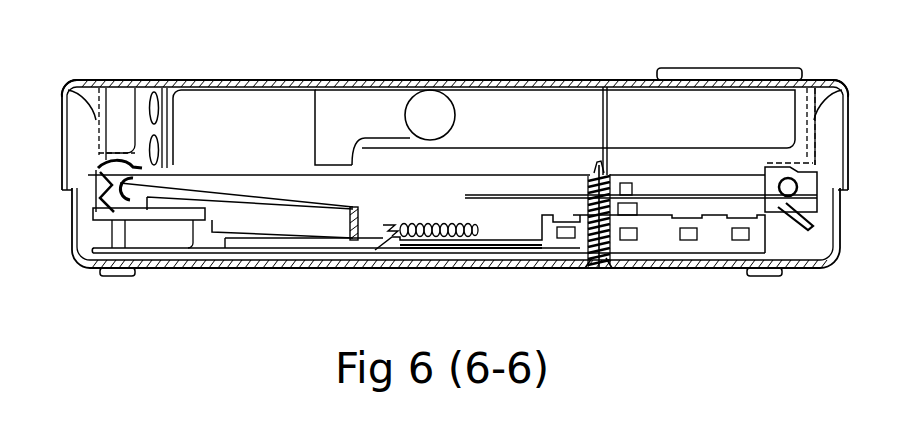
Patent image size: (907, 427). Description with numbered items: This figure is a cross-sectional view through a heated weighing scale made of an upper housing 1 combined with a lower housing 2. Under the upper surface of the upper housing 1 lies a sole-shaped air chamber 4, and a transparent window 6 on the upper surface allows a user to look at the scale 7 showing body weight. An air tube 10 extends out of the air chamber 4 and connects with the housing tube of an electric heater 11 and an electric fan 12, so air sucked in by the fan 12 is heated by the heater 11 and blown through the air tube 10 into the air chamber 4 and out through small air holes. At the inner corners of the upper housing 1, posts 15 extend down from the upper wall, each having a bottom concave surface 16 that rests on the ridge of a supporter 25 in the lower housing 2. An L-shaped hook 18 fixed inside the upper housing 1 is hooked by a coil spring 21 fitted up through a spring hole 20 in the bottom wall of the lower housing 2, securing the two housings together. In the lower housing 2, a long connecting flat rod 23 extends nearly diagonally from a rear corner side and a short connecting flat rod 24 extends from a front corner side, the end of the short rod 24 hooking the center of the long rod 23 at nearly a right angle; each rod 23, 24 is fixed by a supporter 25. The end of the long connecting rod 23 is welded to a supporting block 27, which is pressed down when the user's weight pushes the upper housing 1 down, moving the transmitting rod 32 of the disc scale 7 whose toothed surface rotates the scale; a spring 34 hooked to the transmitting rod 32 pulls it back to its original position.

The upper housing 1 is at (858, 174).
The lower housing 2 is at (733, 268).
The air chamber 4 is at (512, 100).
The transparent window 6 is at (758, 68).
The scale 7 is at (722, 195).
The air tube 10 is at (428, 92).
The electric heater 11 is at (228, 98).
The electric fan 12 is at (154, 92).
The post 15 is at (66, 84).
The bottom concave surface 16 is at (66, 132).
The L-shaped hook 18 is at (603, 120).
The spring hole 20 is at (588, 263).
The coil spring 21 is at (606, 264).
The long connecting flat rod 23 is at (246, 193).
The short connecting flat rod 24 is at (360, 208).
The supporter 25 is at (98, 192).
The supporting block 27 is at (178, 222).
The transmitting rod 32 is at (498, 250).
The spring 34 is at (432, 223).